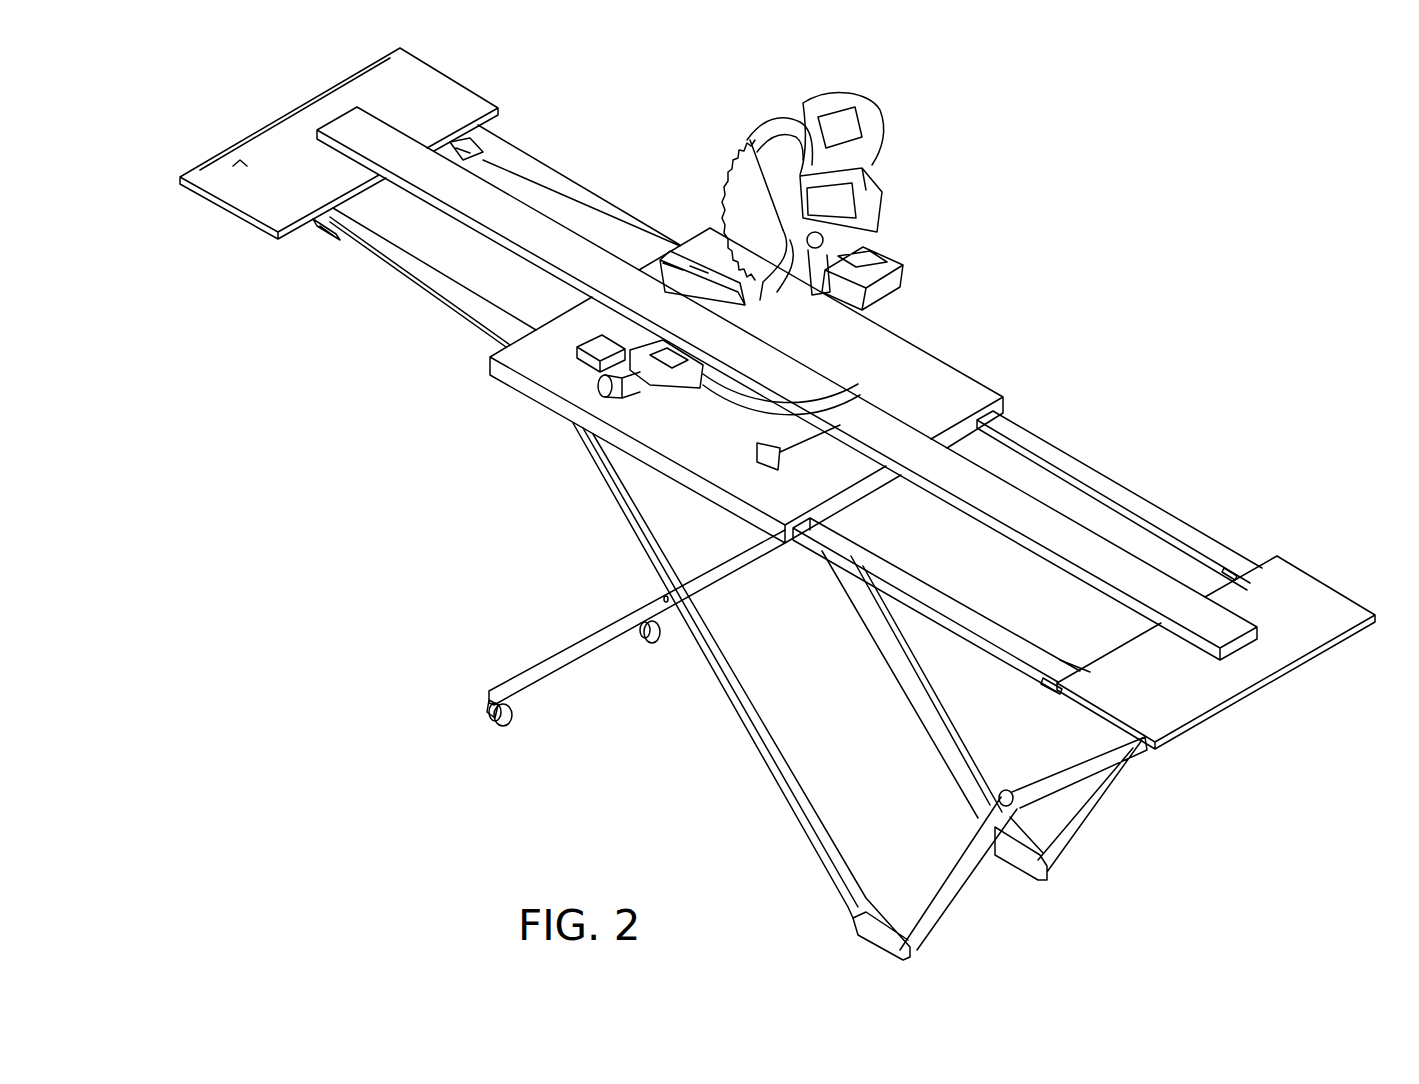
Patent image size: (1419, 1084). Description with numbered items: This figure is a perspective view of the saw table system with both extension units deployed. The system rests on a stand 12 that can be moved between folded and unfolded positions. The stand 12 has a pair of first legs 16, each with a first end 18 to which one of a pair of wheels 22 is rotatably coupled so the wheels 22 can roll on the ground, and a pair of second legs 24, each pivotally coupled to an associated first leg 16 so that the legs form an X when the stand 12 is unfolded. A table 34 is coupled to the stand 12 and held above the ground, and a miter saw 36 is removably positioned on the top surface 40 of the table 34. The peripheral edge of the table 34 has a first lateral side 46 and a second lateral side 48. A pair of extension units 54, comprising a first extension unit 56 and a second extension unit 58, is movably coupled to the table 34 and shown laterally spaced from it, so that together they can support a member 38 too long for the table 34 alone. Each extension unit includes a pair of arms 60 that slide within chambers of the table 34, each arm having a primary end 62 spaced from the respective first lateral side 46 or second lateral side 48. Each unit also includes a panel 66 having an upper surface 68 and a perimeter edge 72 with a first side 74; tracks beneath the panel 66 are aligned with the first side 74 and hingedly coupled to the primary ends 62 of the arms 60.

The stand 12 is at (767, 691).
The first legs 16 is at (668, 626).
The first end 18 is at (490, 715).
The wheels 22 is at (640, 632).
The second legs 24 is at (910, 697).
The table 34 is at (983, 382).
The miter saw 36 is at (883, 208).
The member 38 is at (1055, 505).
The top surface 40 is at (936, 390).
The first lateral side 46 is at (710, 228).
The second lateral side 48 is at (963, 433).
The extension units 54 is at (508, 102).
The first extension unit 56 is at (432, 55).
The second extension unit 58 is at (1360, 592).
The arms 60 is at (1057, 593).
The primary end 62 is at (1280, 596).
The panel 66 is at (380, 62).
The upper surface 68 is at (233, 166).
The perimeter edge 72 is at (350, 195).
The first side 74 is at (300, 232).